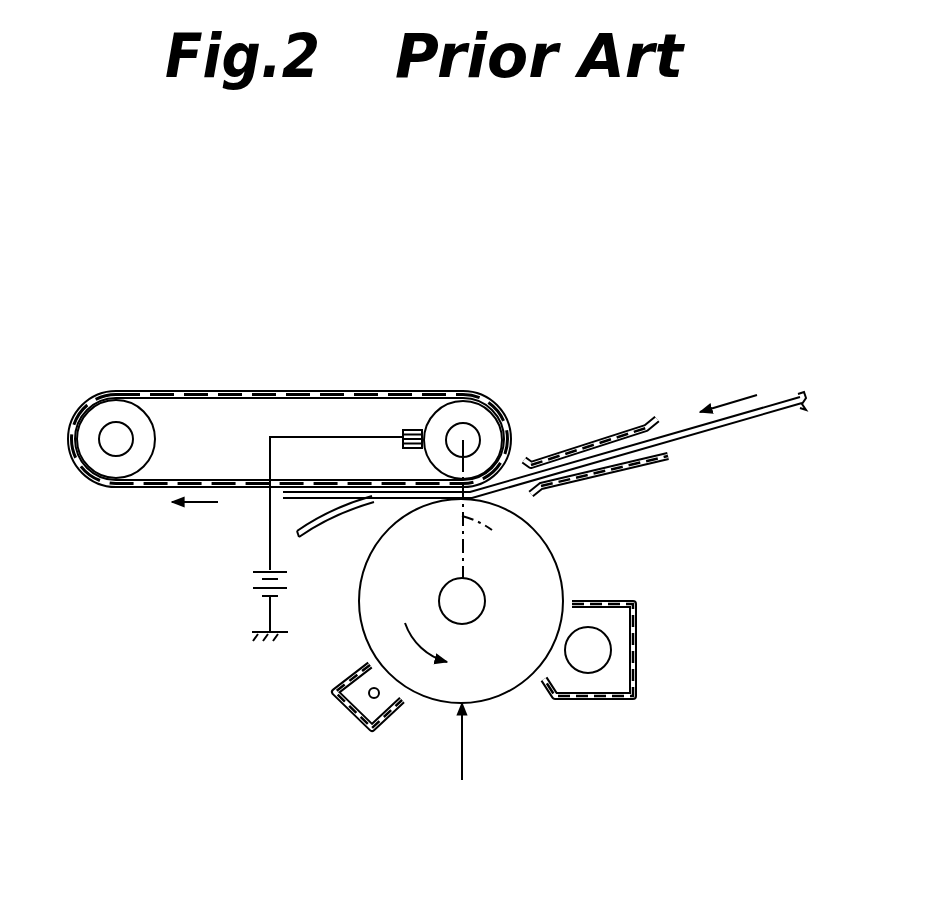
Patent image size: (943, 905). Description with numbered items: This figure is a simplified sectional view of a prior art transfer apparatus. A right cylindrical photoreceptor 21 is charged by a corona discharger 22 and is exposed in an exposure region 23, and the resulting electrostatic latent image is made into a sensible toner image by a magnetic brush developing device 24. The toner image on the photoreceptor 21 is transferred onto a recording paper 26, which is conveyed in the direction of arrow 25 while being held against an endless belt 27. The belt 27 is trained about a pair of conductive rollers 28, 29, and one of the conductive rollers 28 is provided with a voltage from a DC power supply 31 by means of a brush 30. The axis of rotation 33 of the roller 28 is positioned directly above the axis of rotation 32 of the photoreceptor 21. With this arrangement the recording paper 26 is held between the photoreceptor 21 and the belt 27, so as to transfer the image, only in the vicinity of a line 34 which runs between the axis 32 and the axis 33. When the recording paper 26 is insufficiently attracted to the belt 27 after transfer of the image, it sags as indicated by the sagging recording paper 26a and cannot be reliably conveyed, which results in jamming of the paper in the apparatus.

The right cylindrical photoreceptor 21 is at (533, 563).
The corona discharger 22 is at (348, 713).
The exposure region 23 is at (465, 704).
The magnetic brush developing device 24 is at (596, 653).
The arrow 25 is at (732, 398).
The recording paper 26 is at (746, 426).
The sagging recording paper 26a is at (320, 520).
The endless belt 27 is at (203, 477).
The conductive roller 28 is at (466, 414).
The conductive roller 29 is at (124, 415).
The brush 30 is at (405, 433).
The DC power supply 31 is at (265, 571).
The axis of rotation of the photoreceptor 32 is at (463, 601).
The axis of rotation of the roller 33 is at (473, 434).
The line 34 is at (492, 544).